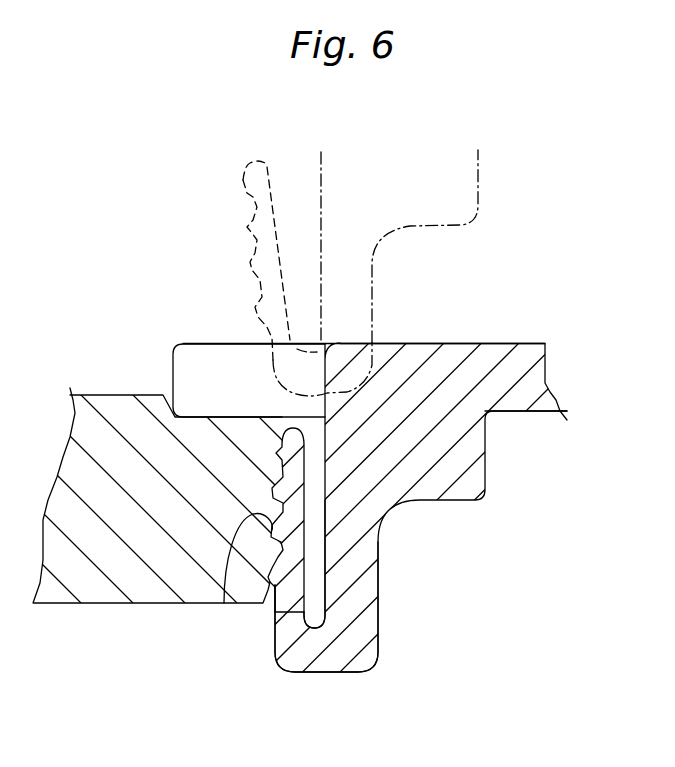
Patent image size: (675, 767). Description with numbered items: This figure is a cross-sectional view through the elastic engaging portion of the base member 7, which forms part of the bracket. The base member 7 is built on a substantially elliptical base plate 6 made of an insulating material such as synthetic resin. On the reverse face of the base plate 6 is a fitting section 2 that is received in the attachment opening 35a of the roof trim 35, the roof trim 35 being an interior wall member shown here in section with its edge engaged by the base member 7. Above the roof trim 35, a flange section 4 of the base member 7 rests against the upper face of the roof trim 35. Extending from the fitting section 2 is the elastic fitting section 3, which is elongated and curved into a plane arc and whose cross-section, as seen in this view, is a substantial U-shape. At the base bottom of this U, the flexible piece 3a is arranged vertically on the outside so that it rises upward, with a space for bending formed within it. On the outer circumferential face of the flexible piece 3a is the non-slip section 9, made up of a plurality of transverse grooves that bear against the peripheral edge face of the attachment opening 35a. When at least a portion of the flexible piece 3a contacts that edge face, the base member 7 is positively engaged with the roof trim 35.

The fitting section 2 is at (473, 481).
The elastic fitting section 3 is at (327, 665).
The flexible piece 3a is at (287, 578).
The flange section 4 is at (200, 345).
The base plate 6 is at (528, 402).
The base member 7 is at (461, 344).
The non-slip section 9 is at (282, 528).
The roof trim 35 is at (127, 577).
The attachment opening 35a is at (232, 540).